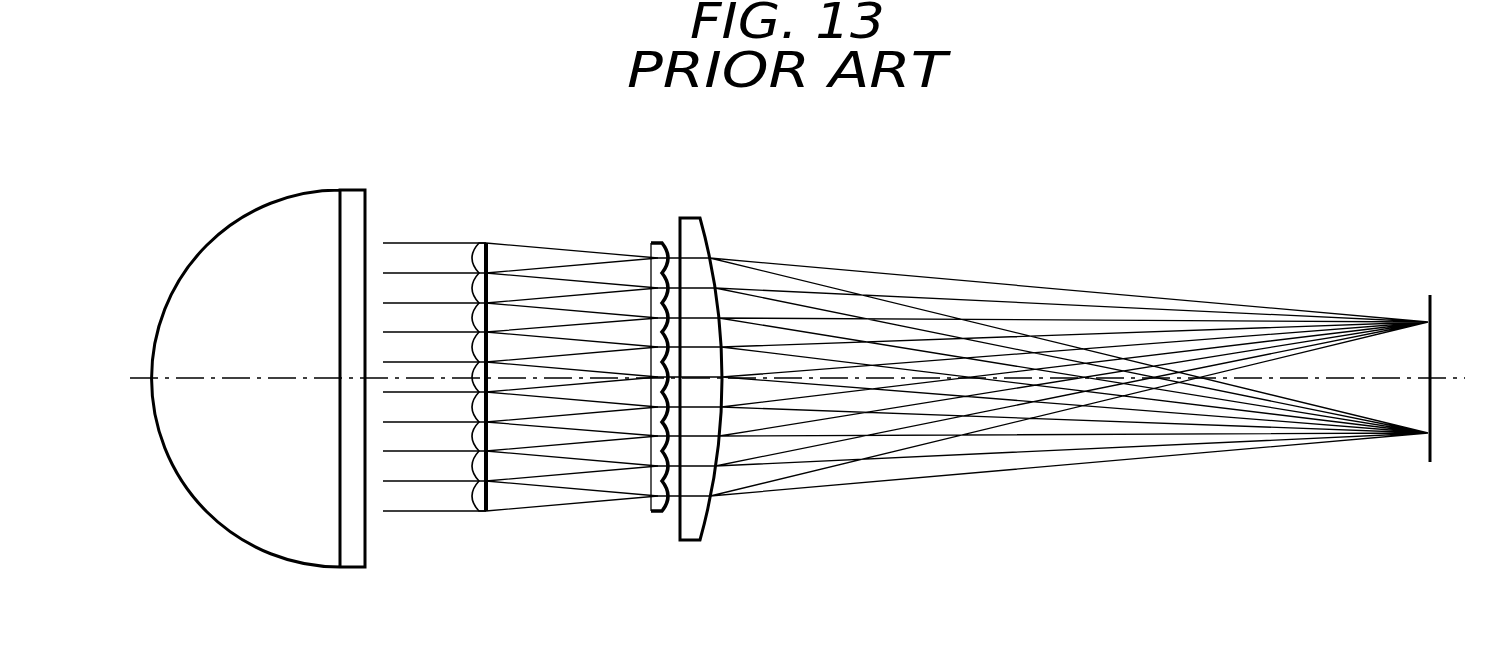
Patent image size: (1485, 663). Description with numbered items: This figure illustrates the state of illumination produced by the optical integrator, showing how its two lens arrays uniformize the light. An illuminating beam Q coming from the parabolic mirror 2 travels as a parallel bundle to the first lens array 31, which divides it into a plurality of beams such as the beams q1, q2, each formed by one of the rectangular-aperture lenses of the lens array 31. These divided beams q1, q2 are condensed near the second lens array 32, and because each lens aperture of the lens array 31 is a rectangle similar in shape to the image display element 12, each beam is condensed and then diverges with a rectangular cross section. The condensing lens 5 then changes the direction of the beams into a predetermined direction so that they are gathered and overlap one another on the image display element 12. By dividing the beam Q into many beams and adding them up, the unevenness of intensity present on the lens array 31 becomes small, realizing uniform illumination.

The parabolic mirror 2 is at (300, 205).
The lens array 31 is at (483, 242).
The lens array 32 is at (657, 242).
The condensing lens 5 is at (700, 216).
The image display element 12 is at (1432, 310).
The illuminating beam Q is at (425, 500).
The divided beam q1 is at (535, 255).
The divided beam q2 is at (565, 290).